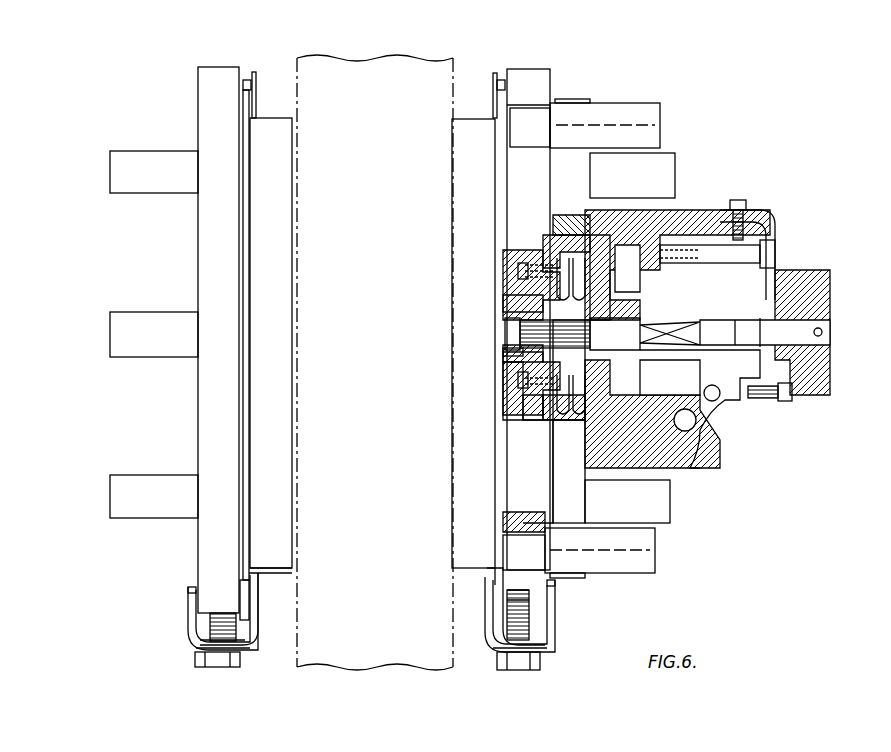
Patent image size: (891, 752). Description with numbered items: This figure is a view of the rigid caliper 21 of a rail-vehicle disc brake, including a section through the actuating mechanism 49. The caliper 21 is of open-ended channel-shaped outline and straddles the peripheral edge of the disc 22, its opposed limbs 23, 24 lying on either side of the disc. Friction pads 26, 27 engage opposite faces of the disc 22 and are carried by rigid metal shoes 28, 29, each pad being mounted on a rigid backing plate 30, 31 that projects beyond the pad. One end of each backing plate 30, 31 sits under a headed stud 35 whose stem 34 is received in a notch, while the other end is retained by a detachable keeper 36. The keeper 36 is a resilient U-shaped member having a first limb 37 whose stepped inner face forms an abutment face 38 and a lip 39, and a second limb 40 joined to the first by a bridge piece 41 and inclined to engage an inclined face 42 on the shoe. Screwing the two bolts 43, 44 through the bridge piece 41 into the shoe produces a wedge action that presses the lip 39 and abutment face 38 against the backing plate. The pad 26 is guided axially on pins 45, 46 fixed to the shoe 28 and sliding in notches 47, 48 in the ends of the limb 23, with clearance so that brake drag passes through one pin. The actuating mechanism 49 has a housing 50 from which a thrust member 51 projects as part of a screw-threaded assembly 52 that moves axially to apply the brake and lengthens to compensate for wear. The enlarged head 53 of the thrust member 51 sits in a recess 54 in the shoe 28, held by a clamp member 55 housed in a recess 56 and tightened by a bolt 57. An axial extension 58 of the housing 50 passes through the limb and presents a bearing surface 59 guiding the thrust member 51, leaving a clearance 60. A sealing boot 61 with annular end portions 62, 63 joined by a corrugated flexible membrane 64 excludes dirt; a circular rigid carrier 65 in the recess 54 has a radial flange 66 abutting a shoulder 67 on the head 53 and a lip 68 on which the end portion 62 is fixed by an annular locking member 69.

The rigid caliper 21 is at (212, 290).
The disc 22 is at (370, 640).
The limb 23 is at (570, 505).
The limb 24 is at (173, 335).
The friction pad 26 is at (478, 140).
The friction pad 27 is at (286, 160).
The rigid metal shoe 28 is at (530, 90).
The rigid metal shoe 29 is at (225, 95).
The rigid backing plate 30 is at (492, 582).
The rigid backing plate 31 is at (247, 563).
The stem 34 is at (250, 80).
The headed stud 35 is at (258, 100).
The detachable keeper 36 is at (205, 637).
The first limb 37 is at (240, 598).
The abutment face 38 is at (238, 592).
The lip 39 is at (257, 568).
The second limb 40 is at (192, 600).
The bridge piece 41 is at (200, 648).
The inclined face 42 is at (192, 587).
The bolt 43 is at (225, 660).
The bolt 44 is at (520, 660).
The pin 45 is at (636, 122).
The pin 46 is at (615, 545).
The notch 47 is at (575, 99).
The notch 48 is at (565, 578).
The actuating mechanism 49 is at (692, 238).
The housing 50 is at (612, 455).
The thrust member 51 is at (648, 428).
The screw-threaded assembly 52 is at (790, 288).
The enlarged head 53 is at (503, 378).
The recess 54 is at (503, 258).
The clamp member 55 is at (503, 354).
The recess 56 is at (525, 330).
The bolt 57 is at (505, 340).
The axial extension 58 is at (540, 420).
The bearing surface 59 is at (503, 300).
The clearance 60 is at (572, 430).
The sealing boot 61 is at (538, 445).
The first annular end portion 62 is at (558, 242).
The second annular end portion 63 is at (608, 232).
The flexible membrane 64 is at (565, 232).
The circular rigid carrier 65 is at (528, 268).
The radial flange 66 is at (516, 270).
The shoulder 67 is at (523, 408).
The lip 68 is at (574, 250).
The annular locking member 69 is at (595, 232).